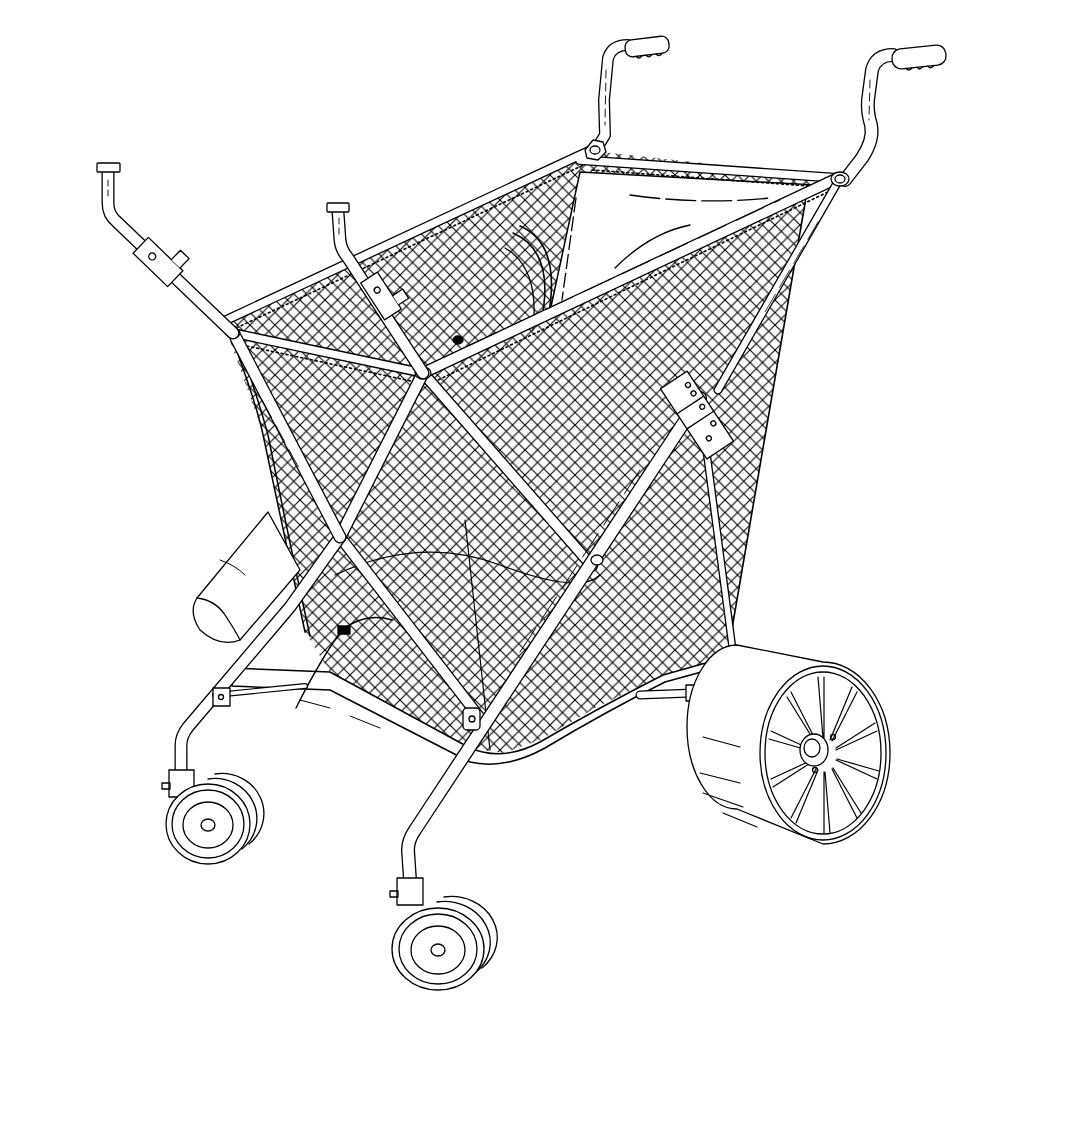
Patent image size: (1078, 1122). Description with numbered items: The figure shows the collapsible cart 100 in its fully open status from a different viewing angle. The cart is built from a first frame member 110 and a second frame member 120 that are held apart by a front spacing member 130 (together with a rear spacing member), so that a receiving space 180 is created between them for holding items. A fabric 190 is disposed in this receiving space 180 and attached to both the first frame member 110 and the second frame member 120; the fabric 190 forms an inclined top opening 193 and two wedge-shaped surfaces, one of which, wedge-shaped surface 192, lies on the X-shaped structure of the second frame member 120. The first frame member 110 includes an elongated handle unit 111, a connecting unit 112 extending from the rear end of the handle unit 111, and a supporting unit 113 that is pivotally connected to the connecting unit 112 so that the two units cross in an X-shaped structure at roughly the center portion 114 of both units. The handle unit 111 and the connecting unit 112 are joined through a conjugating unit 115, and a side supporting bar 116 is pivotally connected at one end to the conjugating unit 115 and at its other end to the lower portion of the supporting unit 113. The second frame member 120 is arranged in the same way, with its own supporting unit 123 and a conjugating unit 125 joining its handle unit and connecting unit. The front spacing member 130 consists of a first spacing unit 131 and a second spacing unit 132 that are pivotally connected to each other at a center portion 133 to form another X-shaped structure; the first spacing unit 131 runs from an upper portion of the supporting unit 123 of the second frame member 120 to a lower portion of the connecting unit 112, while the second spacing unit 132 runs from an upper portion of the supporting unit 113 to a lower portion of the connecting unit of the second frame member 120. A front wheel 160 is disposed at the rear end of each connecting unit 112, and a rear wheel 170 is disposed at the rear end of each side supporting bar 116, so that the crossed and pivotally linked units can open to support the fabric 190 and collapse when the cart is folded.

The collapsible cart 100 is at (138, 42).
The first frame member 110 is at (860, 60).
The handle unit 111 is at (816, 227).
The connecting unit 112 is at (633, 493).
The supporting unit 113 is at (697, 670).
The center portion 114 is at (597, 560).
The conjugating unit 115 is at (712, 390).
The side supporting bar 116 is at (730, 607).
The second frame member 120 is at (585, 58).
The supporting unit 123 is at (167, 293).
The conjugating unit 125 is at (455, 337).
The front spacing member 130 is at (318, 660).
The first spacing unit 131 is at (270, 443).
The second spacing unit 132 is at (292, 603).
The center portion 133 is at (337, 533).
The front wheel 160 is at (160, 830).
The rear wheel 170 is at (870, 772).
The receiving space 180 is at (558, 222).
The fabric 190 is at (530, 439).
The wedge-shaped surface 192 is at (481, 246).
The inclined top opening 193 is at (657, 208).